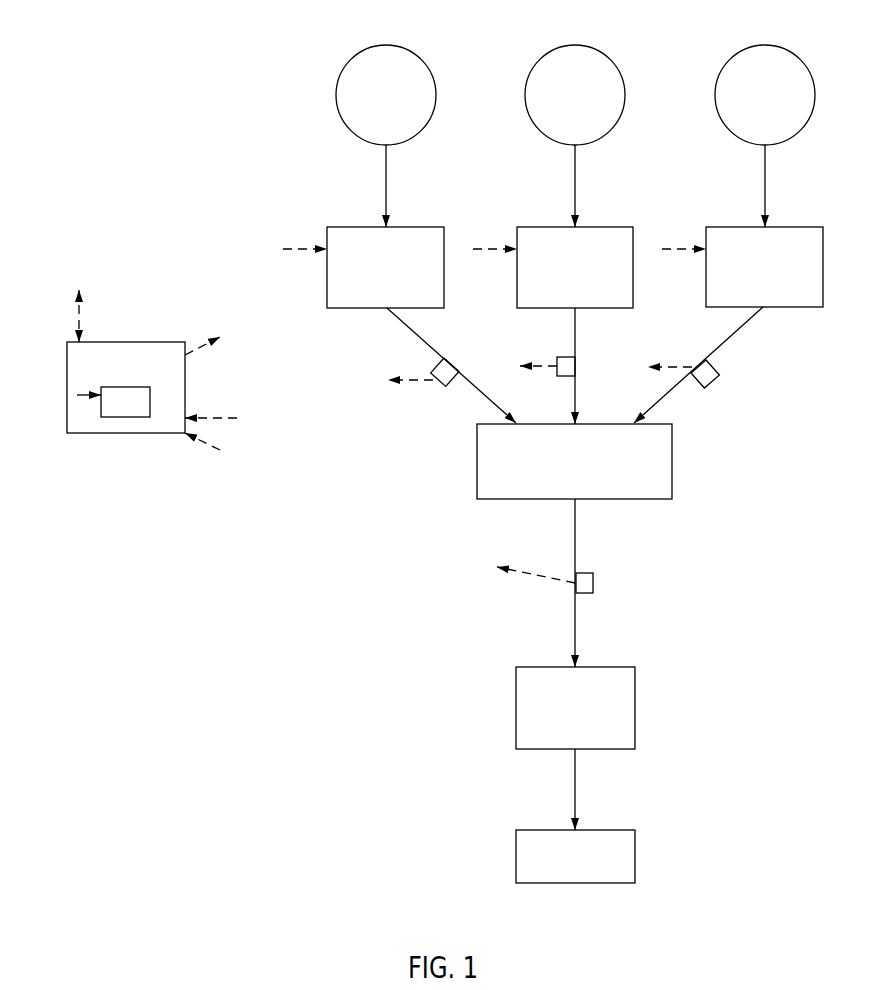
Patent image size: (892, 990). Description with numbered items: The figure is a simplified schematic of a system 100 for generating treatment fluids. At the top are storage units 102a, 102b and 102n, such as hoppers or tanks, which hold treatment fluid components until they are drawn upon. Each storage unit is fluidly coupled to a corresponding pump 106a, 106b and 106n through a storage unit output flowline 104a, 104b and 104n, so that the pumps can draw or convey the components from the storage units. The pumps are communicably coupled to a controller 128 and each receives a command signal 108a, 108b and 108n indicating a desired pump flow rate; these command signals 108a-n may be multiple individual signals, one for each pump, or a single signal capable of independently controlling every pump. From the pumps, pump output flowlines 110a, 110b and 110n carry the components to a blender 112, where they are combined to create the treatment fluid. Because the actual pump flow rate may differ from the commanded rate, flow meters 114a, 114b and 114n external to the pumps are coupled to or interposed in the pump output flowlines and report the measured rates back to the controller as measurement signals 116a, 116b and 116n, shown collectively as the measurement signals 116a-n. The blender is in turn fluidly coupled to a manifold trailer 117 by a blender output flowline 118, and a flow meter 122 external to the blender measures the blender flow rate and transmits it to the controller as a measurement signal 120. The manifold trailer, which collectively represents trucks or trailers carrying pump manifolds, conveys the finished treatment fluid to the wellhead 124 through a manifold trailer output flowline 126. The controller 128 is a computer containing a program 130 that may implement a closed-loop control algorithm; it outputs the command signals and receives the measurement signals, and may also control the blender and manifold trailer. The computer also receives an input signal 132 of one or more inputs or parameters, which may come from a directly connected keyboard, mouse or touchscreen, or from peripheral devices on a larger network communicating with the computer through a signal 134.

The system 100 is at (290, 40).
The storage unit 102a is at (365, 108).
The storage unit 102b is at (554, 108).
The storage unit 102n is at (744, 108).
The storage unit output flowline 104a is at (386, 167).
The storage unit output flowline 104b is at (575, 167).
The storage unit output flowline 104n is at (765, 167).
The pump 106a is at (365, 279).
The pump 106b is at (554, 279).
The pump 106n is at (744, 279).
The command signal 108a is at (300, 248).
The command signal 108b is at (490, 248).
The command signal 108n is at (678, 248).
The command signals 108a-n is at (190, 350).
The pump output flowline 110a is at (424, 341).
The pump output flowline 110b is at (576, 328).
The pump output flowline 110n is at (748, 325).
The blender 112 is at (560, 476).
The flow meter 114a is at (431, 371).
The flow meter 114b is at (562, 357).
The flow meter 114n is at (706, 387).
The measurement signal 116a is at (413, 383).
The measurement signal 116b is at (540, 368).
The measurement signal 116n is at (676, 366).
The measurement signals 116a-n is at (220, 418).
The manifold trailer 117 is at (560, 721).
The blender output flowline 118 is at (575, 527).
The measurement signal 120 is at (533, 578).
The flow meter 122 is at (594, 583).
The wellhead 124 is at (560, 868).
The manifold trailer output flowline 126 is at (576, 792).
The controller 128 is at (111, 374).
The program 130 is at (110, 412).
The input signal 132 is at (77, 397).
The signal 134 is at (79, 318).